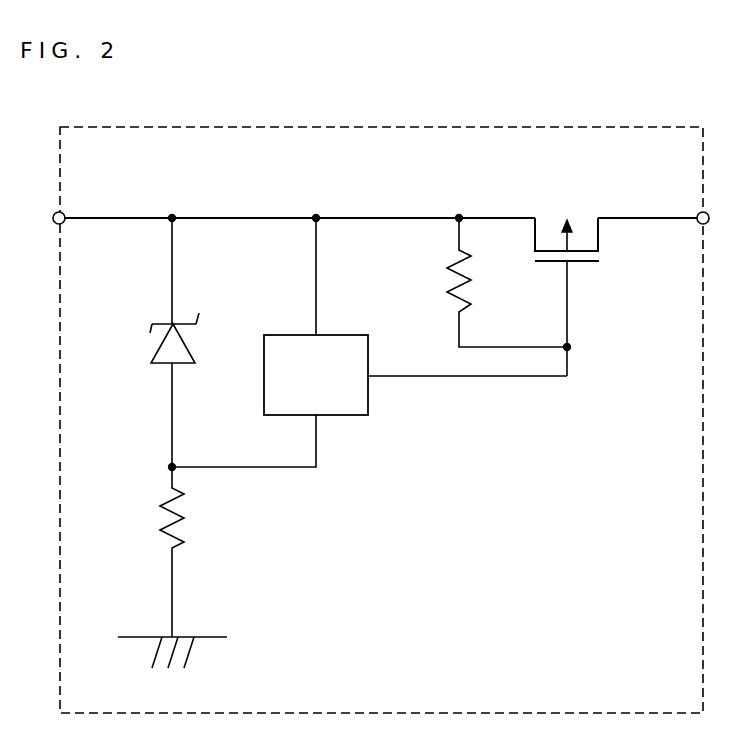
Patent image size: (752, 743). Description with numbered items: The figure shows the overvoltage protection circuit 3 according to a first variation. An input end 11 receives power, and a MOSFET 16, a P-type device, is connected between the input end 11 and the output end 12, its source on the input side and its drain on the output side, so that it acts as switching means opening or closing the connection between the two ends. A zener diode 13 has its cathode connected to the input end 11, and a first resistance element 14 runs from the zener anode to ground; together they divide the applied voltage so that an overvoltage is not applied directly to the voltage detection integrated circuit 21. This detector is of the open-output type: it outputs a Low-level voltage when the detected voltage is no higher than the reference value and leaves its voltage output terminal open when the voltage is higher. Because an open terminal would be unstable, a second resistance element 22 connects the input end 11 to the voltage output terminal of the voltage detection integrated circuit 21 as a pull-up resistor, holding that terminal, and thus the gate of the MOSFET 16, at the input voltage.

The overvoltage protection circuit 3 is at (629, 127).
The input end 11 is at (64, 213).
The output end 12 is at (698, 213).
The zener diode 13 is at (150, 367).
The first resistance element 14 is at (160, 525).
The MOSFET 16 is at (592, 263).
The voltage detection integrated circuit 21 is at (343, 335).
The second resistance element 22 is at (447, 280).